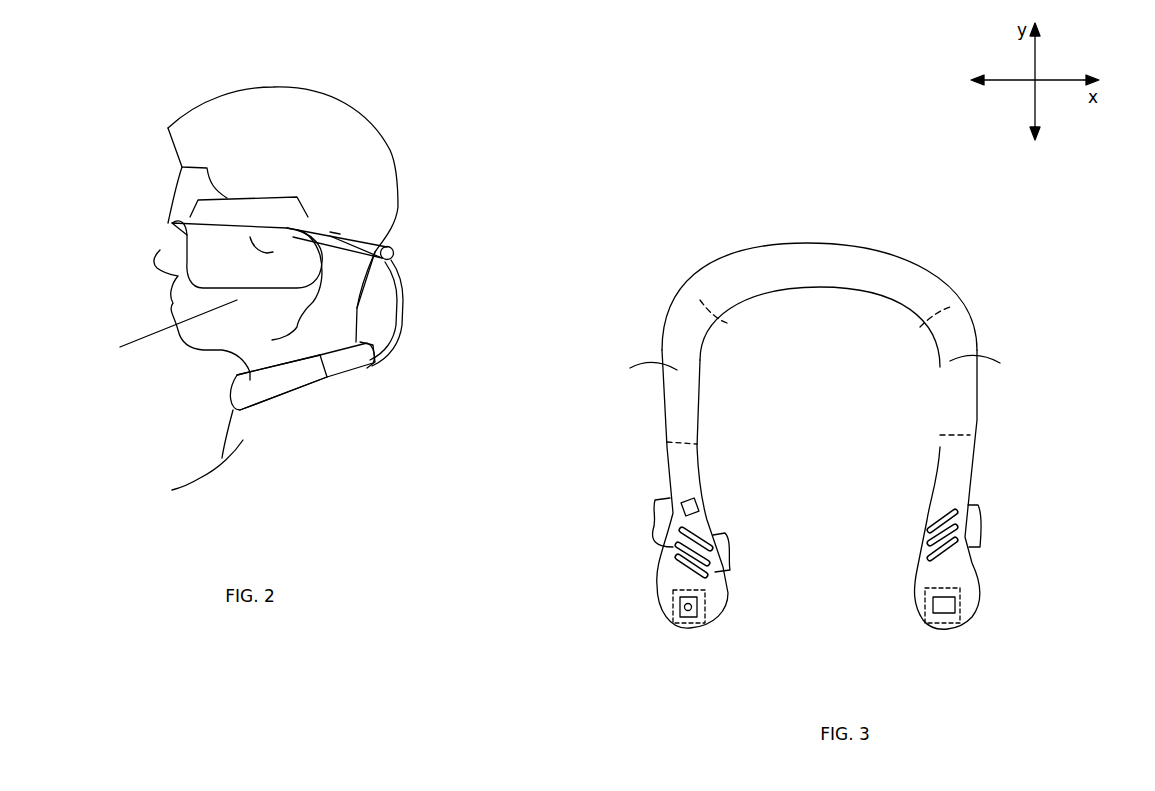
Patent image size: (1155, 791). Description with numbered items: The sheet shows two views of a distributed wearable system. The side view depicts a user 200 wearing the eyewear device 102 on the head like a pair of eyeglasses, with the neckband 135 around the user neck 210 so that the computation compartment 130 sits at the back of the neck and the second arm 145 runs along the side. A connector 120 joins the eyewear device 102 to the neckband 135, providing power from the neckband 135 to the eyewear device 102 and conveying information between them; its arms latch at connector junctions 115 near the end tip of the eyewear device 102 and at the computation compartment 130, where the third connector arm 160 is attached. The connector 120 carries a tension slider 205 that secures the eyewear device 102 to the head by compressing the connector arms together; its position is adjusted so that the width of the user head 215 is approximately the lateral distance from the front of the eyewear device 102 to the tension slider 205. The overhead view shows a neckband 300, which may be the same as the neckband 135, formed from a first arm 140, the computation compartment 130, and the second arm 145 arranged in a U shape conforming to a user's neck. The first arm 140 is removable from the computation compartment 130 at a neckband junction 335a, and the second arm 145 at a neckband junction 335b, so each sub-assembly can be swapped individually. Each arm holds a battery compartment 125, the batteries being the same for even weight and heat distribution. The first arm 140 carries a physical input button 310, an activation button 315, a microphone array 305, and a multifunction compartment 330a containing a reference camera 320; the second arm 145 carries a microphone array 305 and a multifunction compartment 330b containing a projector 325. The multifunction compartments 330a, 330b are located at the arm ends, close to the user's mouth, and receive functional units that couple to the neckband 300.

In FIG. 2, the eyewear device 102 is at (247, 197).
In FIG. 2, the connector junction 115 is at (430, 383).
In FIG. 2, the connector 120 is at (407, 290).
In FIG. 3, the battery compartment 125 is at (818, 362).
In FIG. 2, the computation compartment 130 is at (347, 373).
In FIG. 3, the computation compartment 130 is at (690, 253).
In FIG. 2, the neckband 135 is at (212, 422).
In FIG. 3, the first arm 140 is at (733, 328).
In FIG. 2, the second arm 145 is at (280, 387).
In FIG. 3, the second arm 145 is at (915, 330).
In FIG. 2, the third connector arm 160 is at (353, 237).
In FIG. 2, the user 200 is at (262, 299).
In FIG. 2, the tension slider 205 is at (395, 243).
In FIG. 2, the user neck 210 is at (350, 323).
In FIG. 2, the width of the user head 215 is at (138, 328).
In FIG. 3, the neckband 300 is at (809, 234).
In FIG. 3, the microphone array 305 is at (1023, 515).
In FIG. 3, the physical input button 310 is at (653, 502).
In FIG. 3, the activation button 315 is at (692, 505).
In FIG. 3, the reference camera 320 is at (677, 612).
In FIG. 3, the projector 325 is at (943, 608).
In FIG. 3, the multifunction compartment 330a is at (705, 620).
In FIG. 3, the multifunction compartment 330b is at (960, 592).
In FIG. 3, the neckband junction 335a is at (692, 298).
In FIG. 3, the neckband junction 335b is at (953, 308).